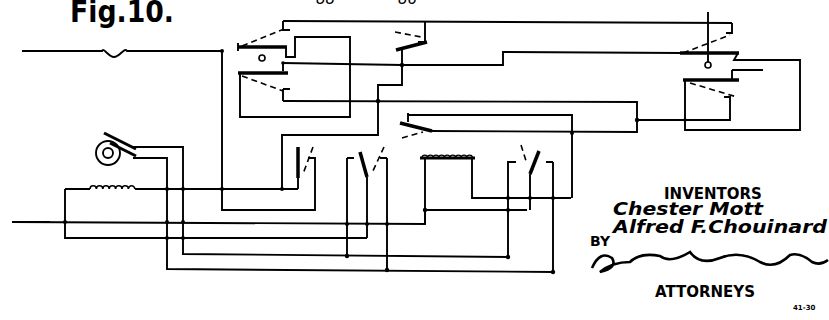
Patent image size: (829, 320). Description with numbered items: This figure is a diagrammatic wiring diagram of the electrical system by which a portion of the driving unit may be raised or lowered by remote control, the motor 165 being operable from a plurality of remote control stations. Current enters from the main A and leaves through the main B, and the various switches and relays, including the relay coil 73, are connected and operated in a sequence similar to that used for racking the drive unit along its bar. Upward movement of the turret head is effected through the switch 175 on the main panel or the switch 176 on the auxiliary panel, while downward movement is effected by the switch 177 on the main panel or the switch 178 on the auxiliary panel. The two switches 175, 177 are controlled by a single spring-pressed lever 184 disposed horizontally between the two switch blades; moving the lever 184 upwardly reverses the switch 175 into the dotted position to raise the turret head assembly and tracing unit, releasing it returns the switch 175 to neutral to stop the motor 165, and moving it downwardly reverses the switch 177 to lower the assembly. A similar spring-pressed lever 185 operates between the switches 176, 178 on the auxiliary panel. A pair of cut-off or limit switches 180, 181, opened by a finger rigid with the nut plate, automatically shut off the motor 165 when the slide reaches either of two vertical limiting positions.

The switch 175 is at (257, 44).
The lever 184 is at (258, 60).
The switch 177 is at (264, 80).
The cut-off switch 180 is at (427, 45).
The cut-off switch 181 is at (427, 111).
The lever 185 is at (706, 34).
The switch 176 is at (731, 46).
The switch 178 is at (712, 88).
The motor 165 is at (97, 126).
The relay coil 73 is at (444, 166).
The main A is at (70, 53).
The main B is at (28, 223).